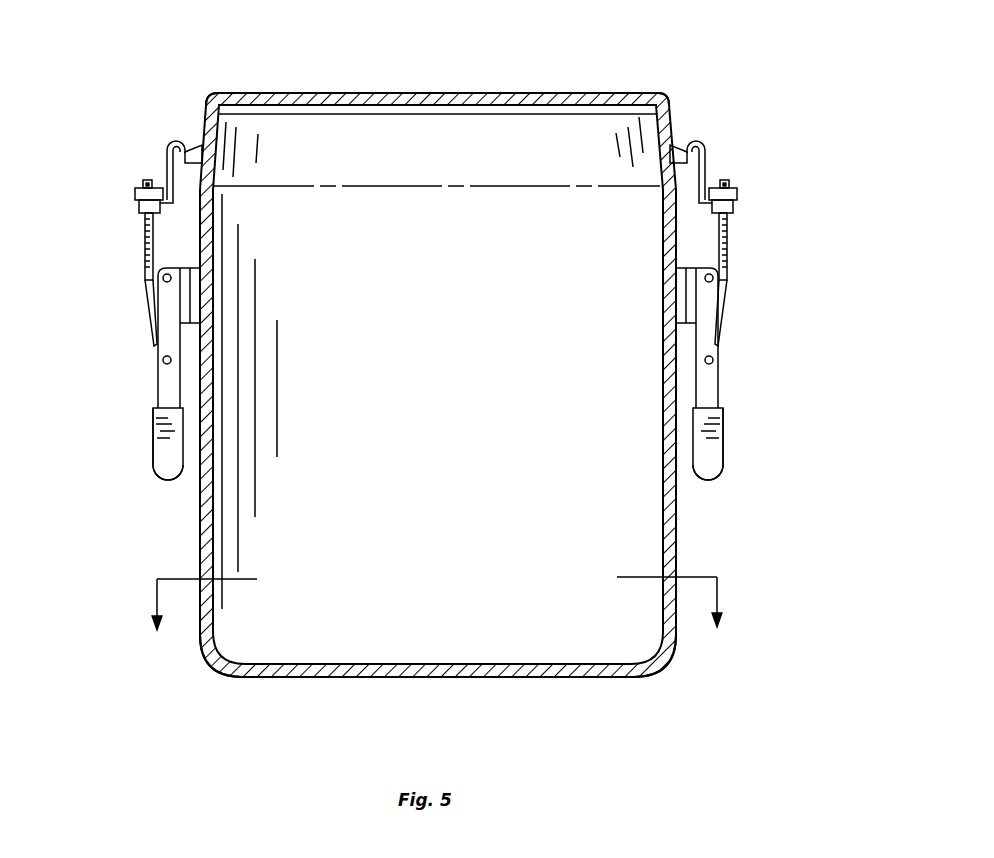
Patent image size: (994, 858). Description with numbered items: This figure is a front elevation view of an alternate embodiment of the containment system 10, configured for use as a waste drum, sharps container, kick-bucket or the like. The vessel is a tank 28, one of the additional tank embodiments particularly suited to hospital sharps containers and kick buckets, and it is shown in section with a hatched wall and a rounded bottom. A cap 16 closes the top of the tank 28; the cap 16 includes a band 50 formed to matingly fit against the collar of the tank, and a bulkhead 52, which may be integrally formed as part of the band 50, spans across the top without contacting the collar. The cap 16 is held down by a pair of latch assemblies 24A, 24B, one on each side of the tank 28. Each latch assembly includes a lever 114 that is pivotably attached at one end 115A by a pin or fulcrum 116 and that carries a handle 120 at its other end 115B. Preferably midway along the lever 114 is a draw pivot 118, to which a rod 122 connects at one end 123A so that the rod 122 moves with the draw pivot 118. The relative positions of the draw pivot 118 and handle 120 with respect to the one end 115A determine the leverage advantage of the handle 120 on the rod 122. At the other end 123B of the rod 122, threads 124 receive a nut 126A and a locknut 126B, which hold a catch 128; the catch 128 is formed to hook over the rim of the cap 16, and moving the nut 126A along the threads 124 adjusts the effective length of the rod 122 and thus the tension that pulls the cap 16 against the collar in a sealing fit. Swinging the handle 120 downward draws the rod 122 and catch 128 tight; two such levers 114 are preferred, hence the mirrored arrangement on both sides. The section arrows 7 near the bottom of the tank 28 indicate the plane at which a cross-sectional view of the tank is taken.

The containment system 10 is at (109, 464).
The cap 16 is at (593, 128).
The tank 28 is at (204, 666).
The band 50 is at (669, 108).
The bulkhead 52 is at (503, 93).
The latch assembly 24A is at (136, 226).
The latch assembly 24B is at (742, 238).
The lever 114 is at (162, 445).
The one end of lever 115A is at (165, 290).
The other end of lever 115B is at (157, 480).
The pin or fulcrum 116 is at (162, 278).
The draw pivot 118 is at (168, 388).
The handle 120 is at (155, 478).
The rod 122 is at (149, 322).
The one end of rod 123A is at (162, 361).
The other end of rod 123B is at (143, 181).
The threads 124 is at (144, 252).
The nut 126A is at (137, 190).
The locknut 126B is at (139, 211).
The catch 128 is at (168, 143).
The section line 7- 7 is at (437, 605).